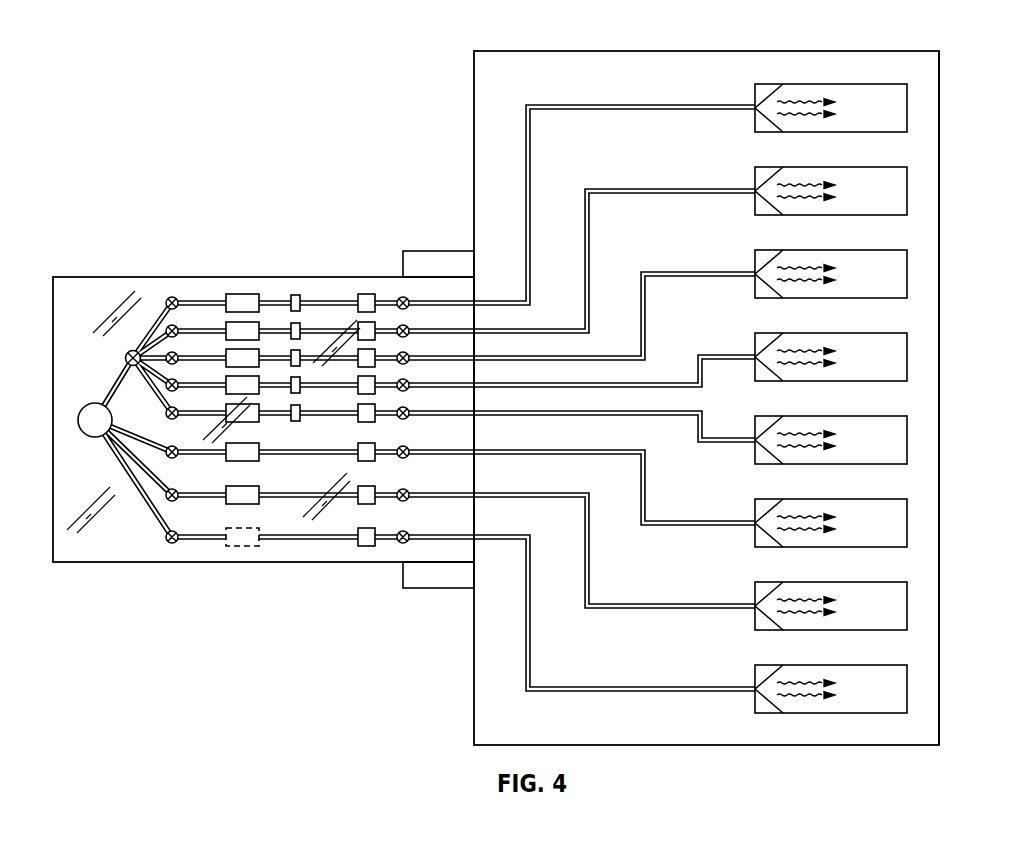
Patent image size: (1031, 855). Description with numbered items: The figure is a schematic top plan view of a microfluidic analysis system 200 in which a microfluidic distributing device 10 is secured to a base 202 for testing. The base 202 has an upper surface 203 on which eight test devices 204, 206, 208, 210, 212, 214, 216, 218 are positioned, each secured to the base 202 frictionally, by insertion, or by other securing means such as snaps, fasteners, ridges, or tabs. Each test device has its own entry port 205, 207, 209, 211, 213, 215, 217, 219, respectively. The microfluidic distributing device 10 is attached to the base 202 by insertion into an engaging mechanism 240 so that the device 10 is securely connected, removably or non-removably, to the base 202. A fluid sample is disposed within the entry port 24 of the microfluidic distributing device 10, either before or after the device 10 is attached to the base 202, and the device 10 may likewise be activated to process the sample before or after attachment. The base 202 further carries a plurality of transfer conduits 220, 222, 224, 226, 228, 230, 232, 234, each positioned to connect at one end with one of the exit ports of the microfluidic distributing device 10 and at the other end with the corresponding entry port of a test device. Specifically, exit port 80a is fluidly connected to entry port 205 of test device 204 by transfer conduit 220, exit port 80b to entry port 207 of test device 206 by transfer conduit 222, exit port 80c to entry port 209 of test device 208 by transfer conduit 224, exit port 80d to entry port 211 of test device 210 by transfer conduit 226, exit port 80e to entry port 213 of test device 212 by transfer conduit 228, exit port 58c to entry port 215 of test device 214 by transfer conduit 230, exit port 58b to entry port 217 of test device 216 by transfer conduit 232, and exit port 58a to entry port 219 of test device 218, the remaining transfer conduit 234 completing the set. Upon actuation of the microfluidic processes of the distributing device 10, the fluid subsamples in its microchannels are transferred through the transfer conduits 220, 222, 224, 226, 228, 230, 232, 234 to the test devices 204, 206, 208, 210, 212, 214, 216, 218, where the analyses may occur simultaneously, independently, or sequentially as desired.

The microfluidic analysis system 200 is at (151, 55).
The microfluidic distributing device 10 is at (102, 277).
The entry port 24 is at (98, 404).
The exit port 80a is at (474, 303).
The exit port 80b is at (474, 331).
The exit port 80c is at (474, 358).
The exit port 80d is at (474, 385).
The exit port 80e is at (474, 413).
The exit port 58a is at (474, 537).
The exit port 58b is at (474, 495).
The exit port 58c is at (474, 452).
The engaging mechanism 240 is at (462, 251).
The base 202 is at (707, 51).
The upper surface 203 is at (888, 62).
The test device 204 is at (907, 108).
The entry port 205 is at (753, 107).
The test device 206 is at (907, 191).
The entry port 207 is at (753, 190).
The test device 208 is at (907, 274).
The entry port 209 is at (753, 273).
The test device 210 is at (907, 357).
The entry port 211 is at (753, 356).
The test device 212 is at (907, 440).
The entry port 213 is at (753, 441).
The test device 214 is at (907, 523).
The entry port 215 is at (753, 524).
The test device 216 is at (907, 606).
The entry port 217 is at (753, 607).
The test device 218 is at (907, 689).
The entry port 219 is at (753, 690).
The transfer conduit 220 is at (652, 105).
The transfer conduit 222 is at (652, 188).
The transfer conduit 224 is at (652, 271).
The transfer conduit 226 is at (697, 380).
The transfer conduit 228 is at (697, 418).
The transfer conduit 230 is at (653, 527).
The transfer conduit 232 is at (653, 610).
The transfer conduit 234 is at (653, 692).